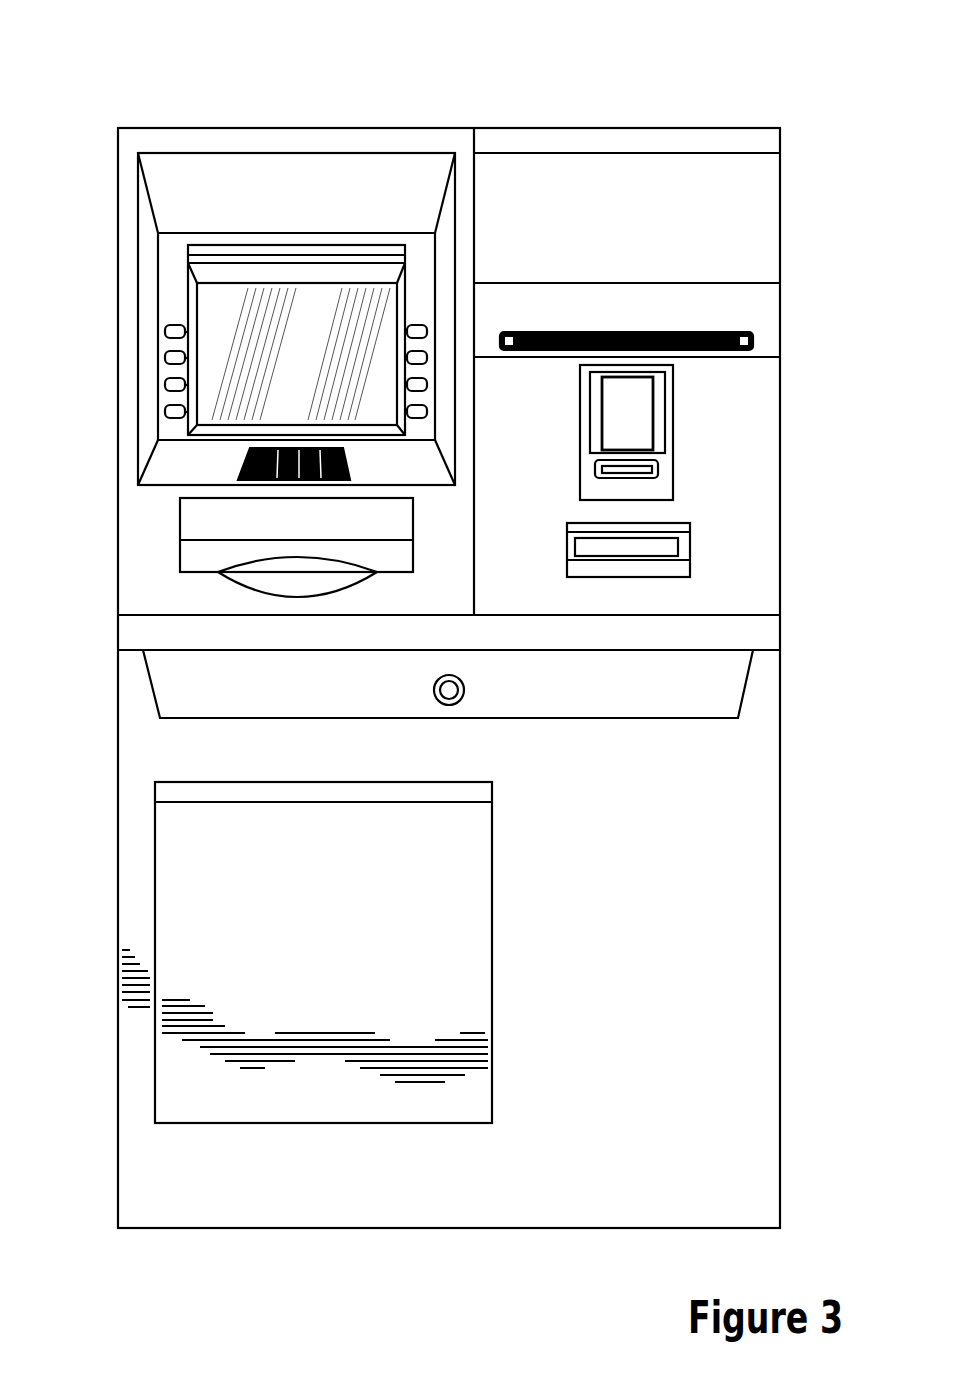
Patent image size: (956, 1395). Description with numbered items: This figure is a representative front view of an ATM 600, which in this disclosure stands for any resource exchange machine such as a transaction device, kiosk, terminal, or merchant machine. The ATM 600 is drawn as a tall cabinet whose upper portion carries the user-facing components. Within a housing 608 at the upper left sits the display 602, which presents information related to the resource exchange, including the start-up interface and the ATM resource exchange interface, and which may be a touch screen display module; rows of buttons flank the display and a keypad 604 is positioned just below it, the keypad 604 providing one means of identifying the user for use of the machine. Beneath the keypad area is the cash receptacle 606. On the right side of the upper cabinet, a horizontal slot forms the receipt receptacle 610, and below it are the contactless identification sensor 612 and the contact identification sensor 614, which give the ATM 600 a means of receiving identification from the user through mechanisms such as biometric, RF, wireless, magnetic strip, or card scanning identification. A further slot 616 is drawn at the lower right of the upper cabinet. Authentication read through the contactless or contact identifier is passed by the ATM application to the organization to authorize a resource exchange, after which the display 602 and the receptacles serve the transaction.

The ATM 600 is at (742, 70).
The display 602 is at (230, 313).
The keypad 604 is at (253, 477).
The cash receptacle 606 is at (180, 537).
The display housing 608 is at (282, 190).
The receipt receptacle 610 is at (755, 342).
The contactless identification sensor 612 is at (668, 408).
The contact identification sensor 614 is at (662, 470).
The cash dispenser slot 616 is at (678, 547).